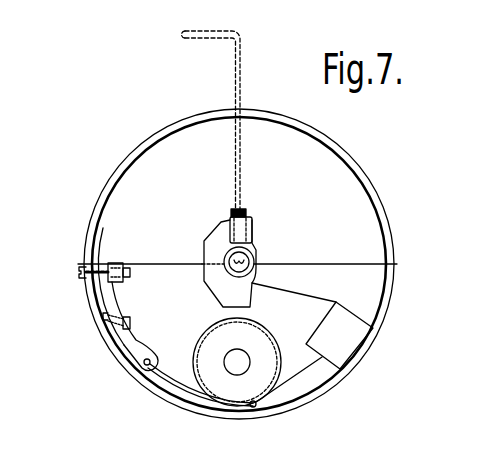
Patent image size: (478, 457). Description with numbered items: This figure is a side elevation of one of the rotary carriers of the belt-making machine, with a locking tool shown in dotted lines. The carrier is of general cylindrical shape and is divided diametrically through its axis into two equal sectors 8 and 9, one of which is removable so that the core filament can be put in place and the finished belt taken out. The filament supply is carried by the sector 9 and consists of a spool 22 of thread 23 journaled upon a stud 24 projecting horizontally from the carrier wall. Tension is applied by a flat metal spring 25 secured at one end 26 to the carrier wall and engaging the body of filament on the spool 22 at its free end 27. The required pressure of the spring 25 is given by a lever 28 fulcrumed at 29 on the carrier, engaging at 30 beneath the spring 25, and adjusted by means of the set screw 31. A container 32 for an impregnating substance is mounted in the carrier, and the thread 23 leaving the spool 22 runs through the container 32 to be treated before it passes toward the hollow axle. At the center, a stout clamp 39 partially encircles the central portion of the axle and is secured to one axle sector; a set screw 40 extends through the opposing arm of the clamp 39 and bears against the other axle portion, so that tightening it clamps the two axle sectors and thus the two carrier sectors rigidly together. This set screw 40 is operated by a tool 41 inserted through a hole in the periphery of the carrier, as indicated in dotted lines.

The carrier sector 8 is at (360, 193).
The carrier sector 9 is at (372, 301).
The spool 22 is at (258, 342).
The thread 23 is at (307, 367).
The stud 24 is at (234, 355).
The flat metal spring 25 is at (169, 373).
The spring end 26 is at (103, 317).
The free end of spring 27 is at (253, 407).
The lever 28 is at (117, 300).
The fulcrum 29 is at (127, 323).
The engagement point 30 is at (147, 366).
The set screw 31 is at (95, 287).
The container 32 is at (350, 337).
The clamp 39 is at (215, 236).
The set screw 40 is at (246, 211).
The tool 41 is at (238, 72).